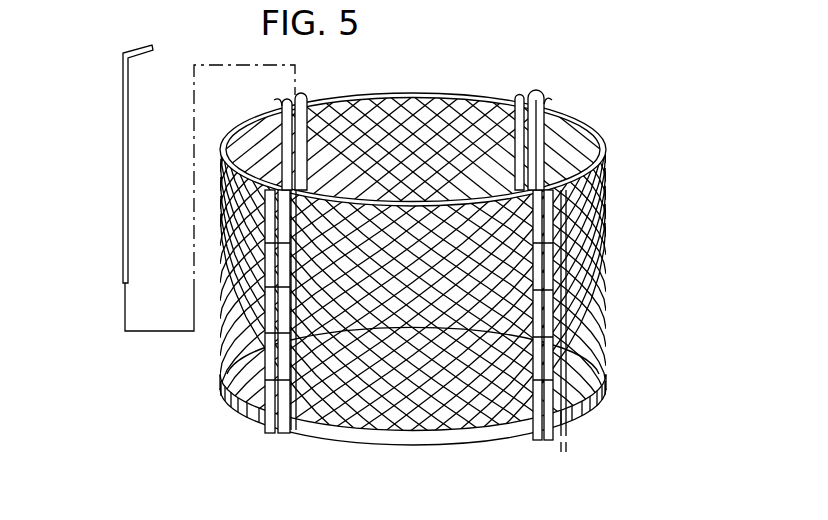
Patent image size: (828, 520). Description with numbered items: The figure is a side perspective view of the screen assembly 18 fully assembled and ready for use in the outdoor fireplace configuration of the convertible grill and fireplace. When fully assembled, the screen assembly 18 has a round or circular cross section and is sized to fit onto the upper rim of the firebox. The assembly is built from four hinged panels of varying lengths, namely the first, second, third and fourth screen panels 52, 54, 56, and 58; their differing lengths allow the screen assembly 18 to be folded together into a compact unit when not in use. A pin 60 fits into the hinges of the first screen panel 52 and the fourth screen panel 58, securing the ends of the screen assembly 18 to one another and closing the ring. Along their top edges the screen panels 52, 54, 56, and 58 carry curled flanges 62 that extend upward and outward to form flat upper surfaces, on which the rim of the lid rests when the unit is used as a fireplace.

The screen assembly 18 is at (418, 239).
The first screen panel 52 is at (223, 404).
The second screen panel 54 is at (385, 442).
The third screen panel 56 is at (545, 433).
The fourth screen panel 58 is at (431, 93).
The pin 60 is at (122, 139).
The curled flanges 62 is at (547, 92).